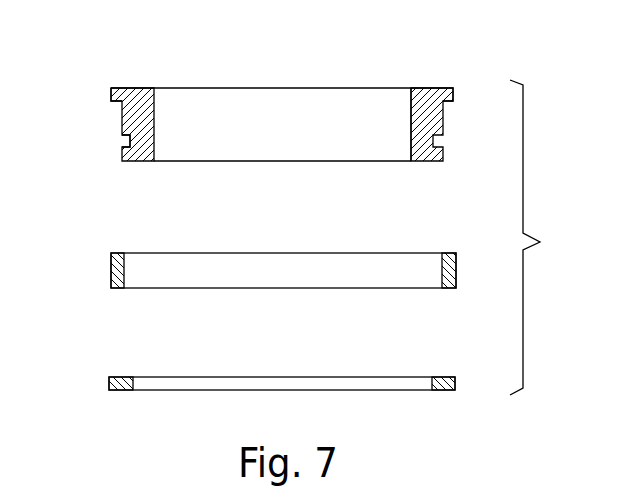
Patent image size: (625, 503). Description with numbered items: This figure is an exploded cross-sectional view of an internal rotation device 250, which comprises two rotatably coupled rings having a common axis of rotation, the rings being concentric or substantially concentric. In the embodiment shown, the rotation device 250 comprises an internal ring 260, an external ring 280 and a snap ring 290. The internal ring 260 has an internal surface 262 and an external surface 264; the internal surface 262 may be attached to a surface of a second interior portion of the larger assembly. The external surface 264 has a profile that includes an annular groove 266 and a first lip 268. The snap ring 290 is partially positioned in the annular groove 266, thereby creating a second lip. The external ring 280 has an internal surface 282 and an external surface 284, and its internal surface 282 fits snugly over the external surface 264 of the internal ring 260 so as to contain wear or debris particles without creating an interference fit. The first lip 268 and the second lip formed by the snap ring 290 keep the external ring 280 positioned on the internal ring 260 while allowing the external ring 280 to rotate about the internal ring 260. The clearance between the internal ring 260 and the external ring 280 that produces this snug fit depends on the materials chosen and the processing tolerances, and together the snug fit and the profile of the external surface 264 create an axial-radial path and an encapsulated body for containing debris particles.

The internal rotation device 250 is at (547, 237).
The internal ring 260 is at (349, 77).
The internal surface 262 is at (410, 137).
The external surface 264 is at (445, 123).
The annular groove 266 is at (121, 143).
The first lip 268 is at (111, 96).
The external ring 280 is at (399, 241).
The internal surface 282 is at (441, 268).
The external surface 284 is at (110, 268).
The snap ring 290 is at (419, 372).